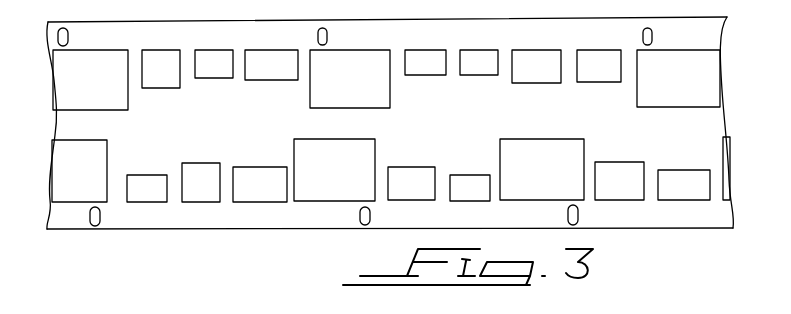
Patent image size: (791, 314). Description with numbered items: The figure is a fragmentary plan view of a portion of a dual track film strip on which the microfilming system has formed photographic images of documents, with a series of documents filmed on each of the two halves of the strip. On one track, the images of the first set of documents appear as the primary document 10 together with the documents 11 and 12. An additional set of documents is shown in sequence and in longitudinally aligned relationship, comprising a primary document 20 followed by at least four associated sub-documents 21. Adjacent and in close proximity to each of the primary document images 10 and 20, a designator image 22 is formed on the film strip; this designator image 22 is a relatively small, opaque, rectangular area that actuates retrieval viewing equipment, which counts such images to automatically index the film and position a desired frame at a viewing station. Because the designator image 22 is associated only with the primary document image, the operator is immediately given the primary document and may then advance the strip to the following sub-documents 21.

The primary document image 10 is at (570, 124).
The document image 11 is at (468, 178).
The document image 12 is at (412, 172).
The primary document 20 is at (343, 124).
The sub-documents 21 is at (247, 178).
The designator image 22 is at (100, 217).